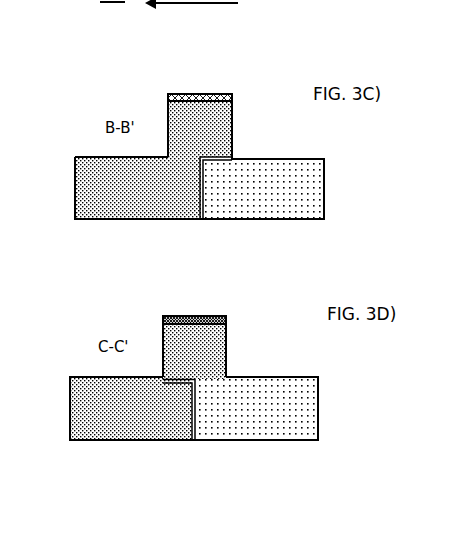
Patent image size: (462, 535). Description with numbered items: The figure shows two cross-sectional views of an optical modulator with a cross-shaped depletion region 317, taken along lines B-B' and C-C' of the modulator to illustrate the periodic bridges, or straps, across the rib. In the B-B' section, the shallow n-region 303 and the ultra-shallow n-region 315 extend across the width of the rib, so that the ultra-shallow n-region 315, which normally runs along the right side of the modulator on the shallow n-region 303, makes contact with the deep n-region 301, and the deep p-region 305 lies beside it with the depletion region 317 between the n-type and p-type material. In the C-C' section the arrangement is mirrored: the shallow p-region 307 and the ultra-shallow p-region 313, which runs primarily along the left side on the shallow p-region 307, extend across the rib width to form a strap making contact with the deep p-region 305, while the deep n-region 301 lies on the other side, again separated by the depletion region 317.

In FIG. 3C, the deep n-region 301 is at (112, 200).
In FIG. 3D, the deep n-region 301 is at (112, 420).
In FIG. 3C, the shallow n-region 303 is at (185, 135).
In FIG. 3C, the deep p-region 305 is at (252, 196).
In FIG. 3D, the deep p-region 305 is at (243, 423).
In FIG. 3D, the shallow p-region 307 is at (175, 365).
In FIG. 3D, the ultra-shallow p-region 313 is at (220, 315).
In FIG. 3C, the ultra-shallow n-region 315 is at (218, 94).
In FIG. 3C, the cross-shaped depletion region 317 is at (200, 220).
In FIG. 3D, the cross-shaped depletion region 317 is at (194, 441).